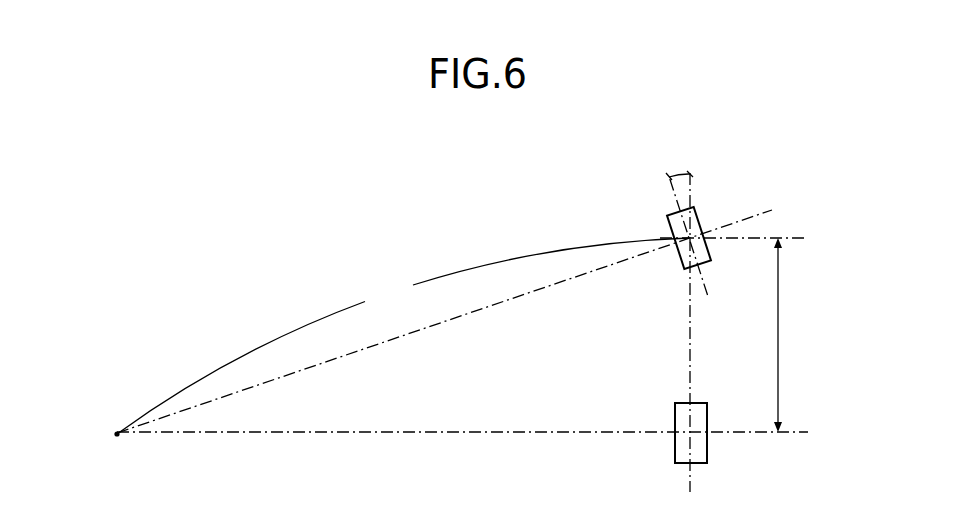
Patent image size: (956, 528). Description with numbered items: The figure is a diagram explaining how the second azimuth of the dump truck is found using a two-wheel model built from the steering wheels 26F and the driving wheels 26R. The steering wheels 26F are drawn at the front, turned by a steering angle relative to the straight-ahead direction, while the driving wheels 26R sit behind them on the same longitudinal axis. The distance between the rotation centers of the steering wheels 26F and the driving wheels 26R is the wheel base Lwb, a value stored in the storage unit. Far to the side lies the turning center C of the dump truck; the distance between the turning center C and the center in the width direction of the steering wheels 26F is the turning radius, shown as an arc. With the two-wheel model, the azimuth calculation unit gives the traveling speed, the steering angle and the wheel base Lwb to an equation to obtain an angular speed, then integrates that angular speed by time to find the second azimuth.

The steering wheels 26F is at (700, 220).
The driving wheels 26R is at (708, 450).
The turning center C is at (118, 425).
The wheel base Lwb is at (796, 335).